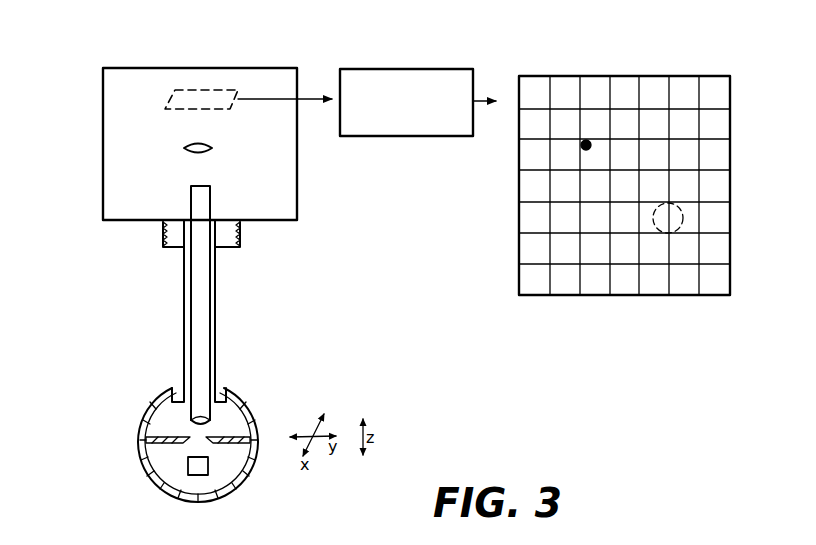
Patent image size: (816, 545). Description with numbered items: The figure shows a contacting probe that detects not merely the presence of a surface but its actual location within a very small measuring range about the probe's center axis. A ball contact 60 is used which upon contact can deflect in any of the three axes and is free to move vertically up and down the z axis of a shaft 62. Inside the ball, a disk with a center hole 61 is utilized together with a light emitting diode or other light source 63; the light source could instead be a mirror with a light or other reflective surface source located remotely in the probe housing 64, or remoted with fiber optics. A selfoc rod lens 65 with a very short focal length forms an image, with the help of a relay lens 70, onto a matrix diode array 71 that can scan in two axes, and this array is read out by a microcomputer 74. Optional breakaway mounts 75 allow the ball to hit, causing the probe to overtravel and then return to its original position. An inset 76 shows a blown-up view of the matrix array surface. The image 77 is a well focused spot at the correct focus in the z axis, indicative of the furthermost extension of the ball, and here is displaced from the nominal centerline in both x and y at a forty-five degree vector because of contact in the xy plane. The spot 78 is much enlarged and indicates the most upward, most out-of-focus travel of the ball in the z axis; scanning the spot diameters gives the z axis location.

The ball contact 60 is at (147, 403).
The disk with a center hole 61 is at (162, 441).
The shaft 62 is at (216, 332).
The light source 63 is at (210, 469).
The probe housing 64 is at (102, 193).
The selfoc rod lens 65 is at (205, 287).
The relay lens 70 is at (213, 150).
The matrix diode array 71 is at (177, 97).
The microcomputer 74 is at (456, 132).
The breakaway mounts 75 is at (163, 232).
The inset showing blown-up view of the matrix array surface 76 is at (587, 296).
The image 77 is at (587, 142).
The spot 78 is at (683, 222).